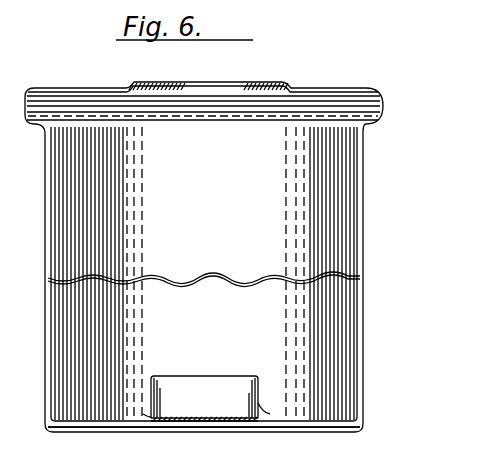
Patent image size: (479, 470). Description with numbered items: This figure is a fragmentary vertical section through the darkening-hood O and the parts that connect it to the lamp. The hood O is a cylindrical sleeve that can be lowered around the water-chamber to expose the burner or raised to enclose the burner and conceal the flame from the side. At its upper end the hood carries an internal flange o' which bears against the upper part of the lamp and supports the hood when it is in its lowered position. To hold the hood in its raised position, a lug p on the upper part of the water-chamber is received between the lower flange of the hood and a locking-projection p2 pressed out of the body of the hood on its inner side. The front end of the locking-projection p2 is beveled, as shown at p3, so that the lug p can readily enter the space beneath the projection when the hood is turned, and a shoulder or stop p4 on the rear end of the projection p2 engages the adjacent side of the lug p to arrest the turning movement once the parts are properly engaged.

The internal flange o' is at (204, 98).
The darkening-hood O is at (204, 279).
The lug p is at (193, 411).
The locking-projection p2 is at (204, 398).
The beveled front end p3 is at (252, 404).
The shoulder or stop p4 is at (141, 407).